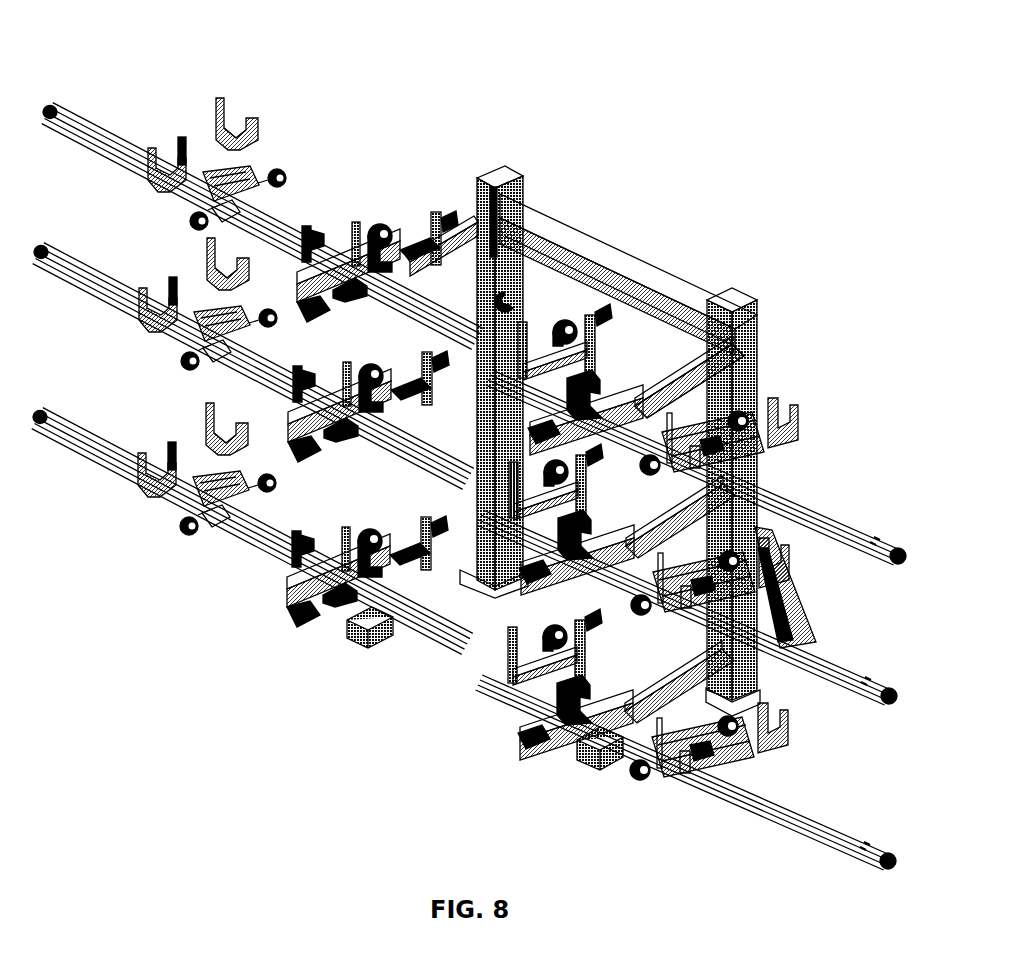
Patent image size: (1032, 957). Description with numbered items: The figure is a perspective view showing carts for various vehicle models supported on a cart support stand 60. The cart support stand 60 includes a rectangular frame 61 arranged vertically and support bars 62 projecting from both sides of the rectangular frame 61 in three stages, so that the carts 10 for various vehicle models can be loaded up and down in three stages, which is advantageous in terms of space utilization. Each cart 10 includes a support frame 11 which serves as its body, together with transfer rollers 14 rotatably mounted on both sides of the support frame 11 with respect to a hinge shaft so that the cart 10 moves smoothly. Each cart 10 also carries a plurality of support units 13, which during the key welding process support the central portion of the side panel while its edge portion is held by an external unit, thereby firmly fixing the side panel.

The cart 10 is at (474, 300).
The support frame 11 is at (323, 216).
The support unit 13 is at (262, 130).
The transfer roller 14 is at (304, 206).
The cart support stand 60 is at (606, 244).
The rectangular frame 61 is at (665, 278).
The support bar 62 is at (470, 200).